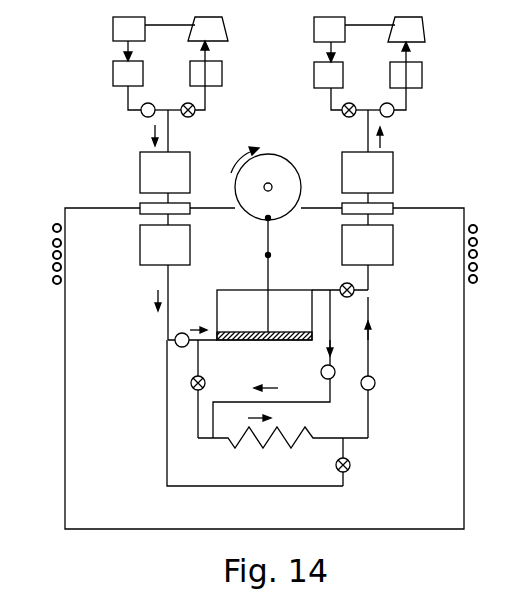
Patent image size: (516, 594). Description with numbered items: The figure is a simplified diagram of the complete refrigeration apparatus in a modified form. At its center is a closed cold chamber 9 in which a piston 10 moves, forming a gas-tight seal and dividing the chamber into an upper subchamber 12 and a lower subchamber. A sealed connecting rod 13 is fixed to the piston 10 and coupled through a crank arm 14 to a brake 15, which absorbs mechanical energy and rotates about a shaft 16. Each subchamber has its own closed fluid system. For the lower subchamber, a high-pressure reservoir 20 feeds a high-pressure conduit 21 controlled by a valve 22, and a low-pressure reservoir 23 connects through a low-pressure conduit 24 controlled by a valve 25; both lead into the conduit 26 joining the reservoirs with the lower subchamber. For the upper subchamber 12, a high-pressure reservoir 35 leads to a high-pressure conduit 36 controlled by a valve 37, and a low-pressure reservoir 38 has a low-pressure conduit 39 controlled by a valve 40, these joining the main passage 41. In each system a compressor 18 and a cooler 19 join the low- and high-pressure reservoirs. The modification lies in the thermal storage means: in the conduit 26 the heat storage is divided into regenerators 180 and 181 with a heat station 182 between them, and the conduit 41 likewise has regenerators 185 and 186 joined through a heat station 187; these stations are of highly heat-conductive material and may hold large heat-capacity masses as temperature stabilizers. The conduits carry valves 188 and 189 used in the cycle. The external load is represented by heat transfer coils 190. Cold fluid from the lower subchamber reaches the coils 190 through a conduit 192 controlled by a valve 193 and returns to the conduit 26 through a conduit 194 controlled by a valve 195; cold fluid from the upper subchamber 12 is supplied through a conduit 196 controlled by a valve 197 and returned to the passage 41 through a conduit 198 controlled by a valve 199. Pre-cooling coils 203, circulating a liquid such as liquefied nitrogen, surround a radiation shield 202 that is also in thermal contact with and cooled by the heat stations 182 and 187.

The closed chamber 9 is at (222, 288).
The piston 10 is at (284, 341).
The upper subchamber 12 is at (220, 305).
The connecting rod 13 is at (270, 277).
The crank arm 14 is at (270, 246).
The brake 15 is at (301, 203).
The shaft 16 is at (272, 184).
The compressor 18 is at (210, 26).
The cooler 19 is at (125, 23).
The high-pressure reservoir 20 is at (142, 72).
The high-pressure conduit 21 is at (141, 114).
The valve 22 is at (152, 106).
The low-pressure reservoir 23 is at (218, 73).
The low-pressure conduit 24 is at (193, 114).
The valve 25 is at (185, 116).
The conduit 26 is at (151, 302).
The high-pressure reservoir 35 is at (343, 72).
The high-pressure conduit 36 is at (328, 101).
The valve 37 is at (343, 117).
The low-pressure reservoir 38 is at (422, 73).
The low-pressure conduit 39 is at (405, 107).
The valve 40 is at (390, 117).
The main passage 41 is at (369, 277).
The regenerator 180 is at (148, 167).
The regenerator 181 is at (148, 242).
The heat station 182 is at (148, 210).
The regenerator 185 is at (387, 165).
The regenerator 186 is at (387, 242).
The heat station 187 is at (387, 210).
The valve 188 is at (180, 336).
The valve 189 is at (342, 284).
The heat transfer coils 190 is at (280, 442).
The conduit 192 is at (199, 360).
The valve 193 is at (205, 384).
The conduit 194 is at (257, 486).
The valve 195 is at (349, 468).
The conduit 196 is at (352, 327).
The valve 197 is at (320, 372).
The conduit 198 is at (370, 418).
The valve 199 is at (376, 383).
The radiation shield 202 is at (65, 318).
The pre-cooling coils 203 is at (53, 270).